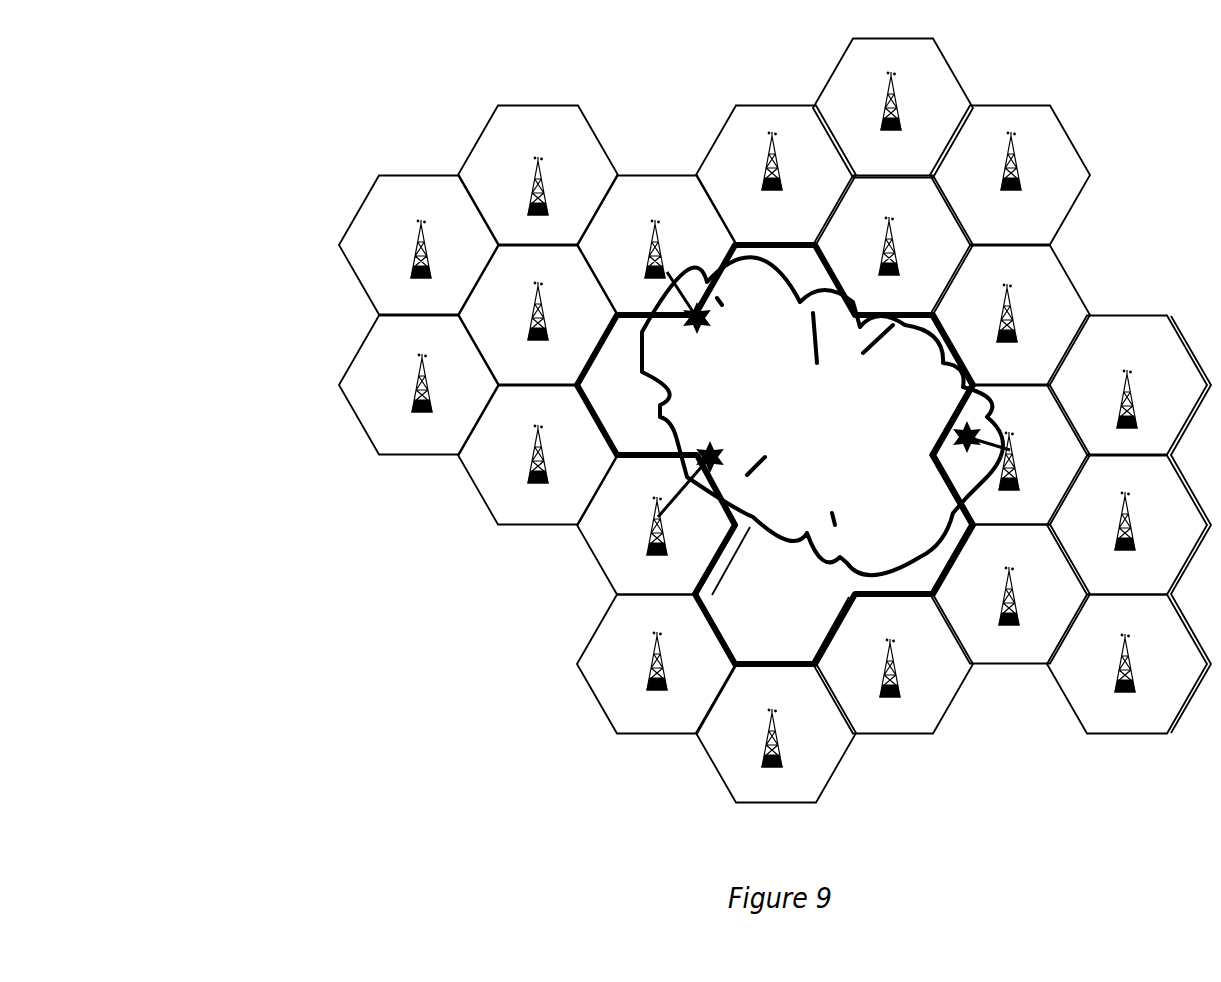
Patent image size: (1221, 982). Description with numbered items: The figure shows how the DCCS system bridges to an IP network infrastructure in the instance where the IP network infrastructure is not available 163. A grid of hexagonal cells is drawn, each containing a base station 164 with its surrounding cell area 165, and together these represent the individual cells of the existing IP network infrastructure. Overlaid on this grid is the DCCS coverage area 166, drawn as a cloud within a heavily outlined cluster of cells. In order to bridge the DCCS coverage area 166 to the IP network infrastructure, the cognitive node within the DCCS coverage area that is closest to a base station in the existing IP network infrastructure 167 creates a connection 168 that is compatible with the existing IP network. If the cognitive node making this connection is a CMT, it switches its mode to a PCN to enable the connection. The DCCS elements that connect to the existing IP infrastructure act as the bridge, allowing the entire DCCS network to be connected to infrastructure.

The instance where the IP network infrastructure is not available 163 is at (590, 415).
The base station 164 is at (420, 222).
The cell area 165 is at (430, 190).
The DCCS coverage area 166 is at (837, 560).
The cognitive node closest to a base station in the existing IP network infrastructu 167 is at (700, 300).
The connection 168 is at (678, 495).